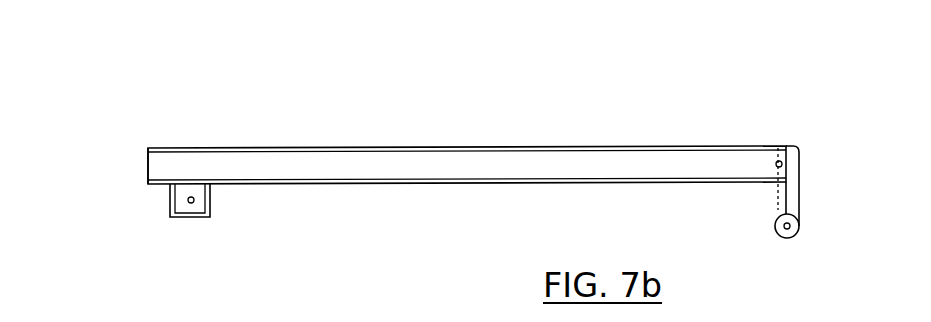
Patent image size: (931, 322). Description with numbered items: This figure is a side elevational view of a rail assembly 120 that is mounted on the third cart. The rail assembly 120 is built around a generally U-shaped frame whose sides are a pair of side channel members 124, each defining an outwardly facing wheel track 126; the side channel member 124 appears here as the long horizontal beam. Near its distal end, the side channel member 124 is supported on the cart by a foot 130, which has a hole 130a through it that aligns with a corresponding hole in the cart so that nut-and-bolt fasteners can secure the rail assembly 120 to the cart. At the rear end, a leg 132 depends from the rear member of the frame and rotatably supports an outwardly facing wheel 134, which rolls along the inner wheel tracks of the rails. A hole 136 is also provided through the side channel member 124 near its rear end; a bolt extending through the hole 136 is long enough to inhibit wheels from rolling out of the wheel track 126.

The rail assembly 120 is at (692, 103).
The side channel member 124 is at (395, 147).
The wheel track 126 is at (164, 160).
The foot 130 is at (205, 209).
The hole 130a is at (190, 204).
The leg 132 is at (793, 194).
The wheel 134 is at (783, 233).
The hole 136 is at (776, 166).